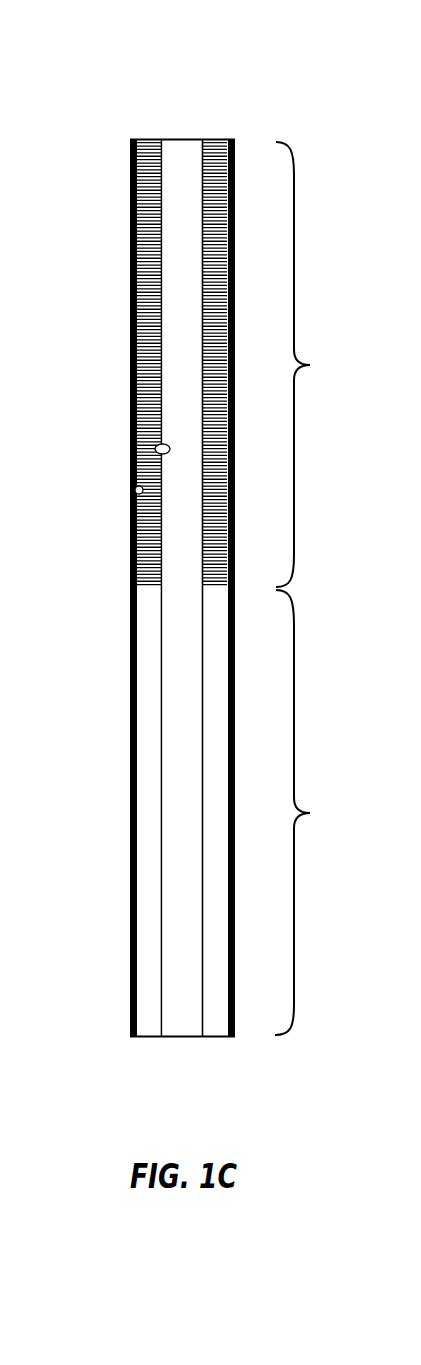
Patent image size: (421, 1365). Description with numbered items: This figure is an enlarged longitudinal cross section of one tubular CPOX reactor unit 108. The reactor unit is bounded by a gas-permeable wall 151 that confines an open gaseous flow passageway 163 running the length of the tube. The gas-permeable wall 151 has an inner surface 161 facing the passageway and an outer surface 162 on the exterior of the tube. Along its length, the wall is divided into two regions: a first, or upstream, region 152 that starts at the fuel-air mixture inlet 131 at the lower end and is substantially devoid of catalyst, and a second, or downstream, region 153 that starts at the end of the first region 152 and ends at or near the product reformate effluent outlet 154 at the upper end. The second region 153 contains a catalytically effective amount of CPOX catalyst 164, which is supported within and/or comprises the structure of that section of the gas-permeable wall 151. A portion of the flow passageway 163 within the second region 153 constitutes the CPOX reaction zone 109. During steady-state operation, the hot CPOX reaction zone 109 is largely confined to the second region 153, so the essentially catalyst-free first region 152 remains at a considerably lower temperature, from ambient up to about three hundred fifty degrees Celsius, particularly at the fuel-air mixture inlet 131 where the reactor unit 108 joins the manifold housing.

The CPOX reactor unit 108 is at (201, 563).
The product reformate effluent outlet 154 is at (180, 128).
The gas-permeable wall 151 is at (130, 276).
The CPOX catalyst 164 is at (138, 311).
The CPOX reaction zone 109 is at (170, 374).
The open gaseous flow passageway 163 is at (181, 417).
The inner surface 161 is at (137, 452).
The outer surface 162 is at (137, 497).
The second region 153 is at (312, 364).
The first region 152 is at (311, 812).
The fuel-air mixture inlet 131 is at (179, 1052).